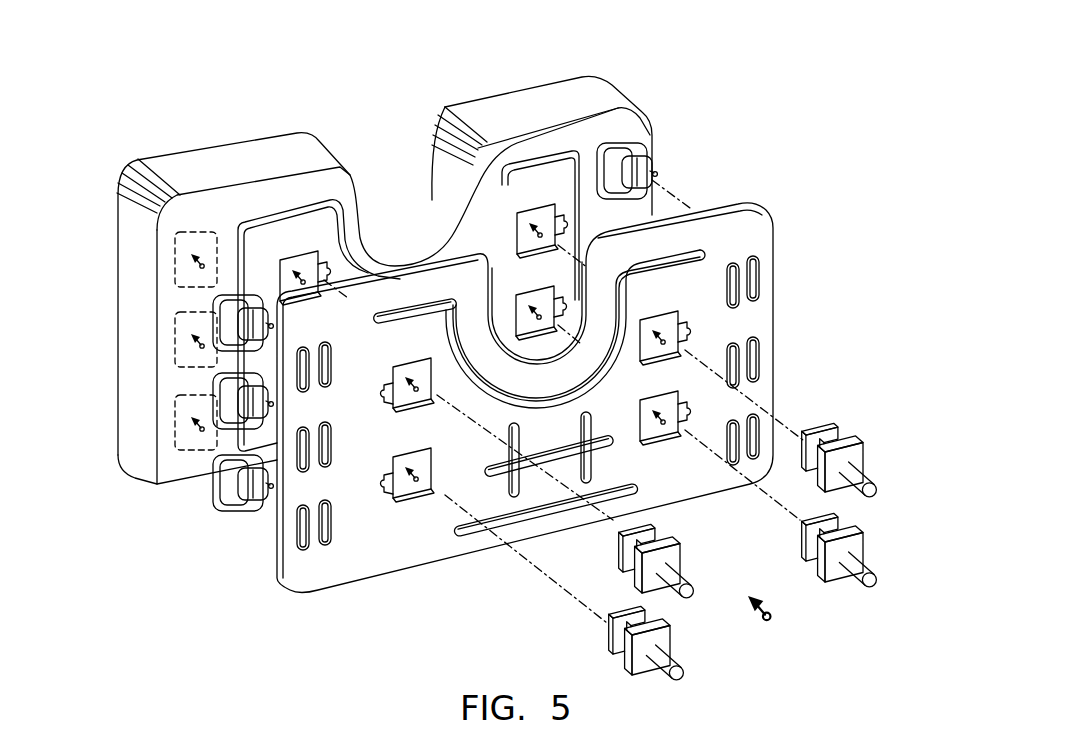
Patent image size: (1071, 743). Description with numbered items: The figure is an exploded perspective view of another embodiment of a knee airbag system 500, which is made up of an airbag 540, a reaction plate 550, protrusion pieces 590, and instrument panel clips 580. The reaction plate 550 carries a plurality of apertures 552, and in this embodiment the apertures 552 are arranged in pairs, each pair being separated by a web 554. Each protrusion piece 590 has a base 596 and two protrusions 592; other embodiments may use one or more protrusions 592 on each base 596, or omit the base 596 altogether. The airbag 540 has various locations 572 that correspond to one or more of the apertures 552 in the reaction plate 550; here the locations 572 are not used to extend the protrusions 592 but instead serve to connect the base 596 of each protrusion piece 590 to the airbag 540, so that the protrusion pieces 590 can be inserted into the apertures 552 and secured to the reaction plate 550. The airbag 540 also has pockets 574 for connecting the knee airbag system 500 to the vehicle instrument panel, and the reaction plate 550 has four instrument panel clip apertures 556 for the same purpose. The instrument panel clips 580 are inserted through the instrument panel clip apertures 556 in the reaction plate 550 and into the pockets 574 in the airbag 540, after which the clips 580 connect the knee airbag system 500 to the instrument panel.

The knee airbag system 500 is at (773, 622).
The airbag 540 is at (641, 95).
The reaction plate 550 is at (780, 212).
The apertures 552 is at (278, 540).
The web 554 is at (740, 280).
The instrument panel clip apertures 556 is at (407, 484).
The locations 572 is at (176, 258).
The pockets 574 is at (314, 268).
The instrument panel clips 580 is at (826, 496).
The protrusion pieces 590 is at (203, 332).
The protrusions 592 is at (656, 172).
The base 596 is at (213, 395).